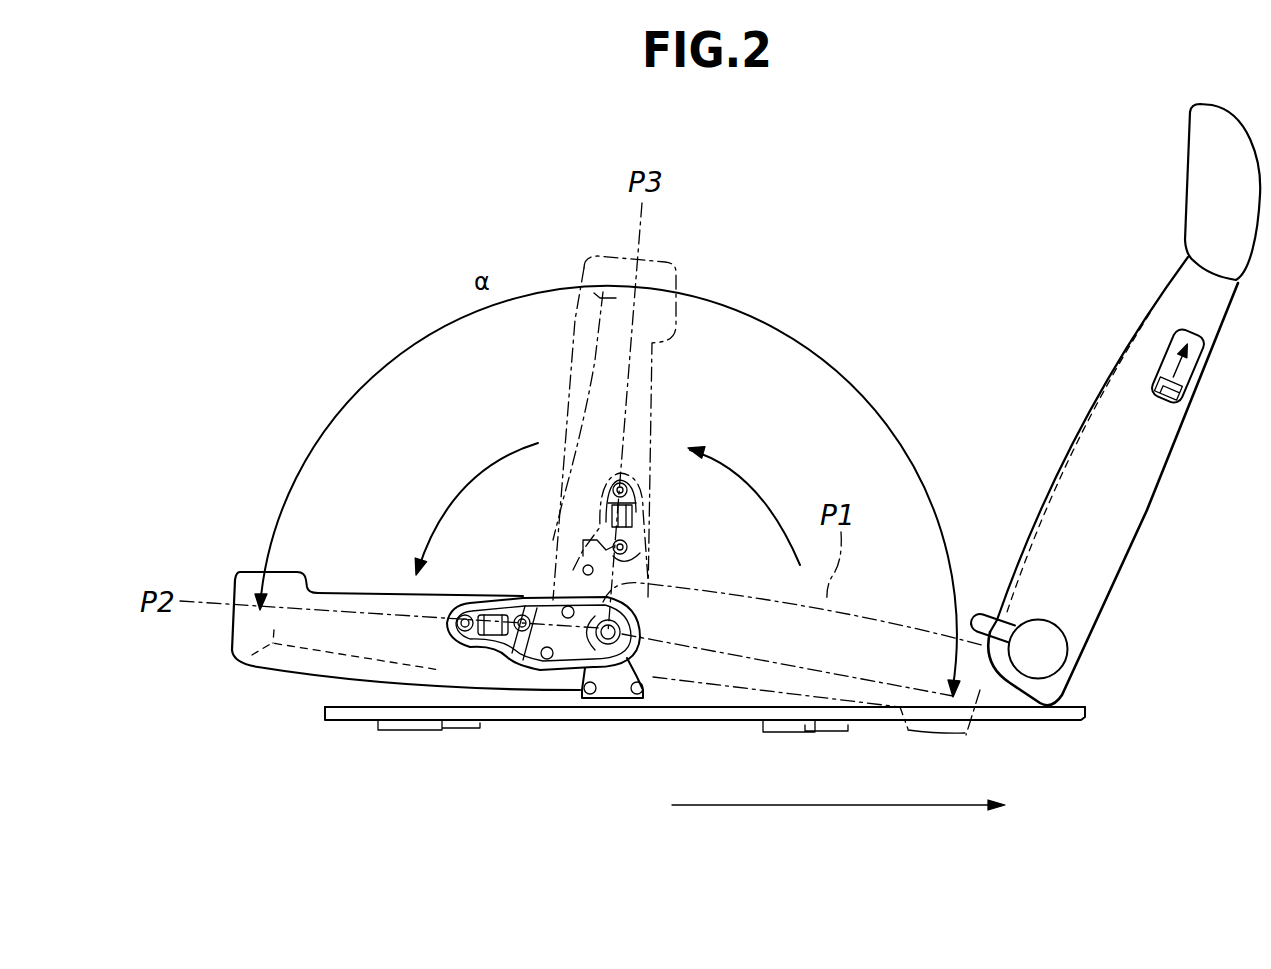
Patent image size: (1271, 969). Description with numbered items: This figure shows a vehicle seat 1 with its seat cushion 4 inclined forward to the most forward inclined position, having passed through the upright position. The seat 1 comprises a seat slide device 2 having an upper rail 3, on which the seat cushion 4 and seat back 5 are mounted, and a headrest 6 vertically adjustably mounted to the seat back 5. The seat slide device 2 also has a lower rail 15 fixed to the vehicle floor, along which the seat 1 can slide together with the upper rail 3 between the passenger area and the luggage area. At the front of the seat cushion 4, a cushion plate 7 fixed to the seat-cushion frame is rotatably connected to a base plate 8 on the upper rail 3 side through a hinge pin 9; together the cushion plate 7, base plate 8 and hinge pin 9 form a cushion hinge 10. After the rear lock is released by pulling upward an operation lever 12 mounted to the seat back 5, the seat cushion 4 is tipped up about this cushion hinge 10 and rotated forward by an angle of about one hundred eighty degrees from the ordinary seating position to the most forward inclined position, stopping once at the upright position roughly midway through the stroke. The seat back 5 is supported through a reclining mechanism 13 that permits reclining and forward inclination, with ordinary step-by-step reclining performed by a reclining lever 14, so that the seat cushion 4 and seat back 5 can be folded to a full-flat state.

The seat 1 is at (888, 568).
The seat slide device 2 is at (635, 732).
The upper rail 3 is at (703, 744).
The seat cushion 4 is at (290, 680).
The seat back 5 is at (1114, 482).
The headrest 6 is at (1198, 190).
The cushion plate 7 is at (487, 657).
The base plate 8 is at (612, 694).
The hinge pin 9 is at (598, 644).
The cushion hinge 10 is at (530, 731).
The operation lever 12 is at (1185, 398).
The reclining mechanism 13 is at (1057, 658).
The reclining lever 14 is at (980, 614).
The lower rail 15 is at (345, 720).